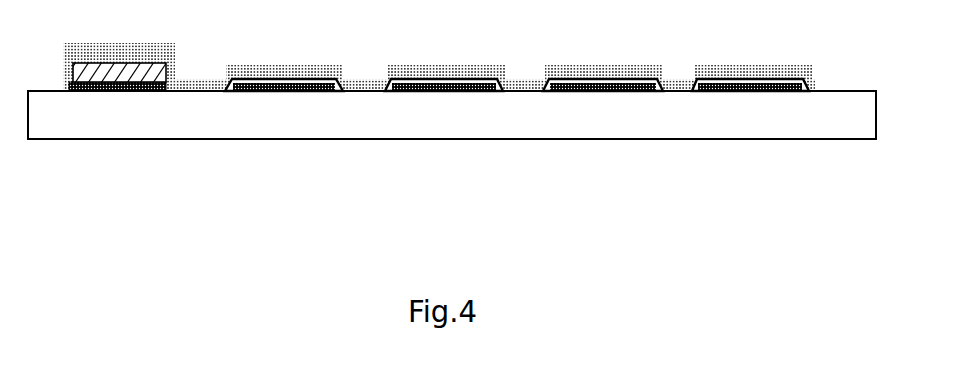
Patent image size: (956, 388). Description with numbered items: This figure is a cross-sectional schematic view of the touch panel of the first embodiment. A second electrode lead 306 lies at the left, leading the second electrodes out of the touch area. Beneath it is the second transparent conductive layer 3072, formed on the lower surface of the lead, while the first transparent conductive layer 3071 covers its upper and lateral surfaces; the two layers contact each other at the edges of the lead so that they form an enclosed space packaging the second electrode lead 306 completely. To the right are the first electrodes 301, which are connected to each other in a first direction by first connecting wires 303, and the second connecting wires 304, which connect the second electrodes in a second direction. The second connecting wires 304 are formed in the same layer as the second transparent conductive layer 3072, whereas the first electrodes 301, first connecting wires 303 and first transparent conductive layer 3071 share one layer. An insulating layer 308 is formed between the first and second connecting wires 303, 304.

The first electrode 301 is at (397, 73).
The first connecting wire 303 is at (522, 85).
The second connecting wire 304 is at (281, 91).
The second electrode lead 306 is at (130, 72).
The insulating layer 308 is at (323, 79).
The first transparent conductive layer 3071 is at (127, 52).
The second transparent conductive layer 3072 is at (93, 91).